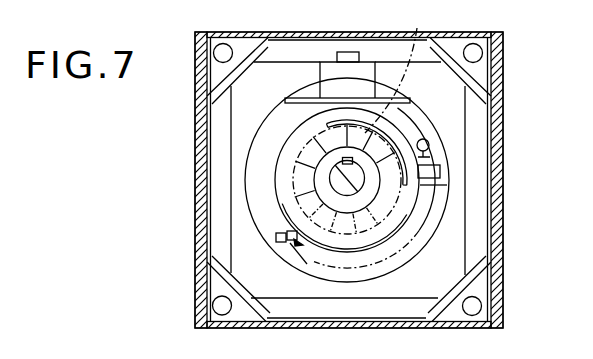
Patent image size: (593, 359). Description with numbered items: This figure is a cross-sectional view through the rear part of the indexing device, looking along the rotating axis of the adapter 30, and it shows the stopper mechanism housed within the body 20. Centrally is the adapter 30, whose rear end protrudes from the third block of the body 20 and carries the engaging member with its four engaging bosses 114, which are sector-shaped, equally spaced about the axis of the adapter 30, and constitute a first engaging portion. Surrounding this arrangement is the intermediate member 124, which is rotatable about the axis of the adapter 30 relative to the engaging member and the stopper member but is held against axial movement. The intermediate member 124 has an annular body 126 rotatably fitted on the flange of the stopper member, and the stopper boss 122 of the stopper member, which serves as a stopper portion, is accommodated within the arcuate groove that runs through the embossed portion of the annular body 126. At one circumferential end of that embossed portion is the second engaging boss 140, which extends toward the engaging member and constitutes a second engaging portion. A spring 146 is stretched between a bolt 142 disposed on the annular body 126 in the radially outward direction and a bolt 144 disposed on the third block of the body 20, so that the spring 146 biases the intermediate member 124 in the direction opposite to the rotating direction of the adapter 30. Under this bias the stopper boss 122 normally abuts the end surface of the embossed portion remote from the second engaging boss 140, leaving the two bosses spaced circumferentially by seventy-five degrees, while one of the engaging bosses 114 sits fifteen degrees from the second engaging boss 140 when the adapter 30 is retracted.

The body 20 is at (455, 243).
The adapter 30 is at (349, 197).
The engaging bosses 114 is at (327, 333).
The stopper boss 122 is at (403, 185).
The intermediate member 124 is at (273, 190).
The annular body 126 is at (285, 203).
The second engaging boss 140 is at (288, 119).
The bolt 142 is at (277, 233).
The bolt 144 is at (429, 143).
The spring 146 is at (435, 162).